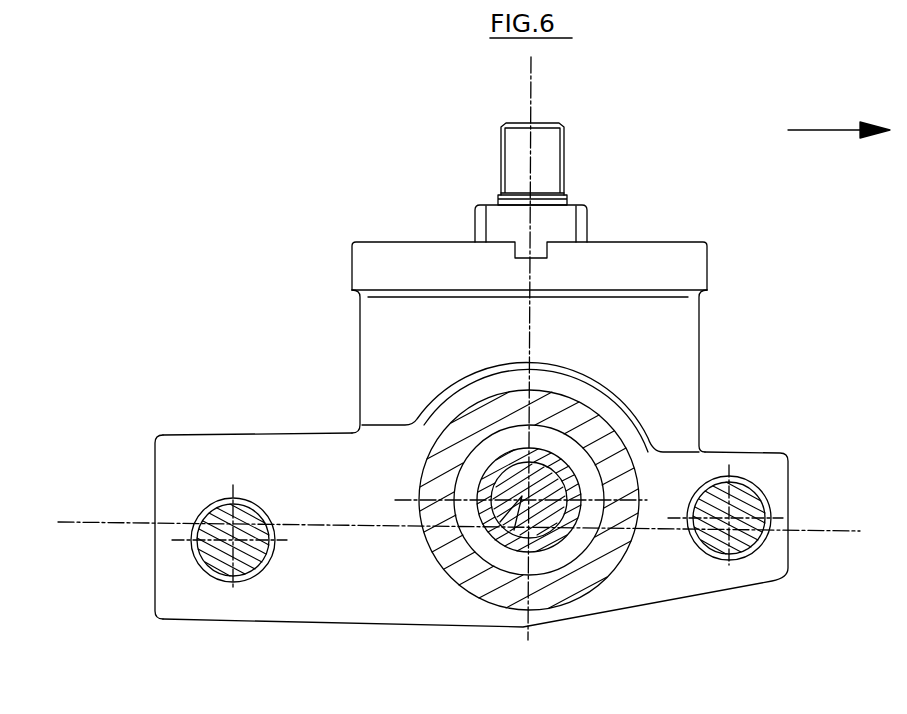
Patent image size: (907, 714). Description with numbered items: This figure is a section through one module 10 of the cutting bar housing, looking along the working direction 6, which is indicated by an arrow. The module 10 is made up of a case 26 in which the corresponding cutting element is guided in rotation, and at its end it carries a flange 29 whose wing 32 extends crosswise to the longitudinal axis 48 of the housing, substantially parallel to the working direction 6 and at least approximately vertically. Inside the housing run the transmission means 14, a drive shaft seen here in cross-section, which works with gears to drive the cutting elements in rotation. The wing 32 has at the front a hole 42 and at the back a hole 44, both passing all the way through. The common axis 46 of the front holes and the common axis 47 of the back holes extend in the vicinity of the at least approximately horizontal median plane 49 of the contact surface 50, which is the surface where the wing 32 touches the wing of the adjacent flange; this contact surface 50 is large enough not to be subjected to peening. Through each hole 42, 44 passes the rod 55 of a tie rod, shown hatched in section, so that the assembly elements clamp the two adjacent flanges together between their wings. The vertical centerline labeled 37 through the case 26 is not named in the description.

The working direction 6 is at (809, 130).
The module 10 is at (767, 377).
The transmission means 14 is at (438, 567).
The case 26 is at (346, 347).
The flange 29 is at (215, 421).
The wing 32 is at (287, 623).
The central axis 37 is at (531, 75).
The front hole 42 is at (748, 548).
The back hole 44 is at (258, 510).
The common axis of the front holes 46 is at (695, 498).
The common axis of the back holes 47 is at (197, 560).
The longitudinal axis of the housing 48 is at (572, 513).
The horizontal median plane 49 is at (846, 530).
The contact surface 50 is at (180, 473).
The rod 55 is at (260, 560).